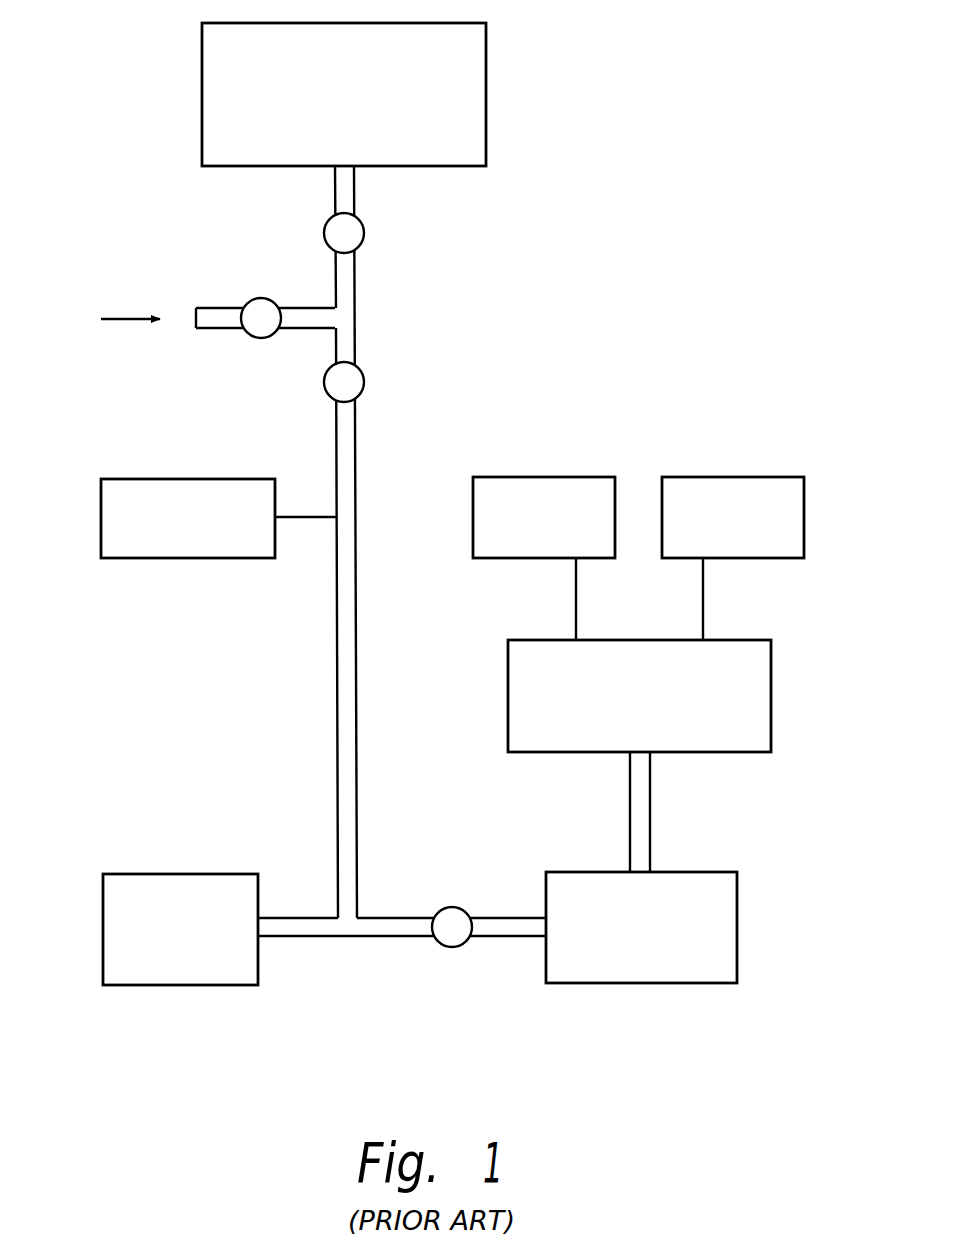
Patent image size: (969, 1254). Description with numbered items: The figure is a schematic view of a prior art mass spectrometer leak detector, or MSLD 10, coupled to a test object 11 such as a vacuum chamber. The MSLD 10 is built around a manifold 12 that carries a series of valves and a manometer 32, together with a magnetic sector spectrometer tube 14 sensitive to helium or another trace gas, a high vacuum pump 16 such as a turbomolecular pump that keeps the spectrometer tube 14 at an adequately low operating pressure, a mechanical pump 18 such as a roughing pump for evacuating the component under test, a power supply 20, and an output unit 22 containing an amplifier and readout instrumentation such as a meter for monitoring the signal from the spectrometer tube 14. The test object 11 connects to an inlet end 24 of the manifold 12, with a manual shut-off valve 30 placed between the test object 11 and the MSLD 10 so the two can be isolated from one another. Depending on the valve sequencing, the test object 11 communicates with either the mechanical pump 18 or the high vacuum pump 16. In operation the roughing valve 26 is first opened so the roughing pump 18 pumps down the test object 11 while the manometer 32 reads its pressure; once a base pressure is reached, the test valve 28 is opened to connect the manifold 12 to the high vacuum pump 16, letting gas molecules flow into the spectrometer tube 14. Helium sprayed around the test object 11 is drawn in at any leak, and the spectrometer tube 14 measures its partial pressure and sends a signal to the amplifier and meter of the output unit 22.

The MSLD 10 is at (668, 115).
The test object 11 is at (486, 90).
The manifold 12 is at (337, 673).
The magnetic sector spectrometer tube 14 is at (771, 690).
The high vacuum pump 16 is at (737, 928).
The mechanical pump 18 is at (103, 928).
The power supply 20 is at (473, 519).
The output unit 22 is at (804, 517).
The inlet end 24 is at (355, 288).
The roughing valve 26 is at (364, 381).
The test valve 28 is at (451, 907).
The manual shut-off valve 30 is at (364, 233).
The manometer 32 is at (180, 480).